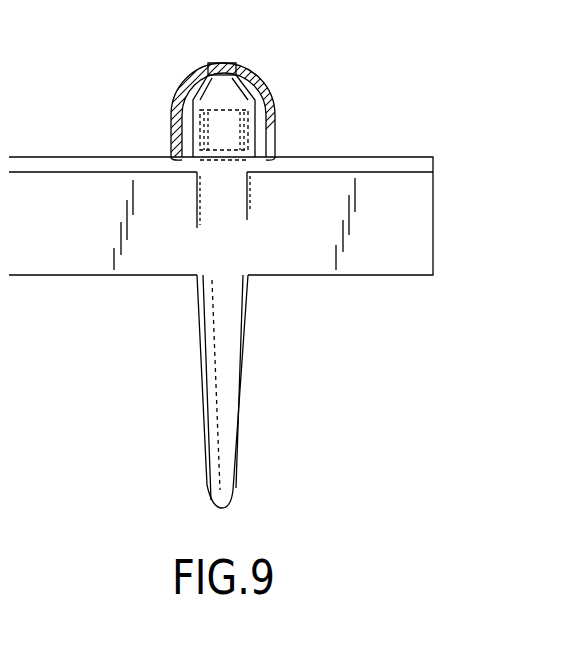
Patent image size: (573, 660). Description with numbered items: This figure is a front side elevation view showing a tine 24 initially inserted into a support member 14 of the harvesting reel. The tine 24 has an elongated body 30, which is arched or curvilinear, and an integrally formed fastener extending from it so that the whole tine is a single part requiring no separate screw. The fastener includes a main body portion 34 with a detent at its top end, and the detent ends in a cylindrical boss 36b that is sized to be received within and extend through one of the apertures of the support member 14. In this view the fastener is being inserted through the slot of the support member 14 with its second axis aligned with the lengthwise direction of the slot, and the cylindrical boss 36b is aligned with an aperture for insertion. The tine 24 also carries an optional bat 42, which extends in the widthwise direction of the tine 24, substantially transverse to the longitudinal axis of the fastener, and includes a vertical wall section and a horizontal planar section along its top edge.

The tine 24 is at (143, 352).
The elongated body 30 is at (243, 398).
The bat 42 is at (412, 155).
The support member 14 is at (249, 73).
The main body portion 34 is at (252, 123).
The cylindrical boss 36b is at (222, 62).